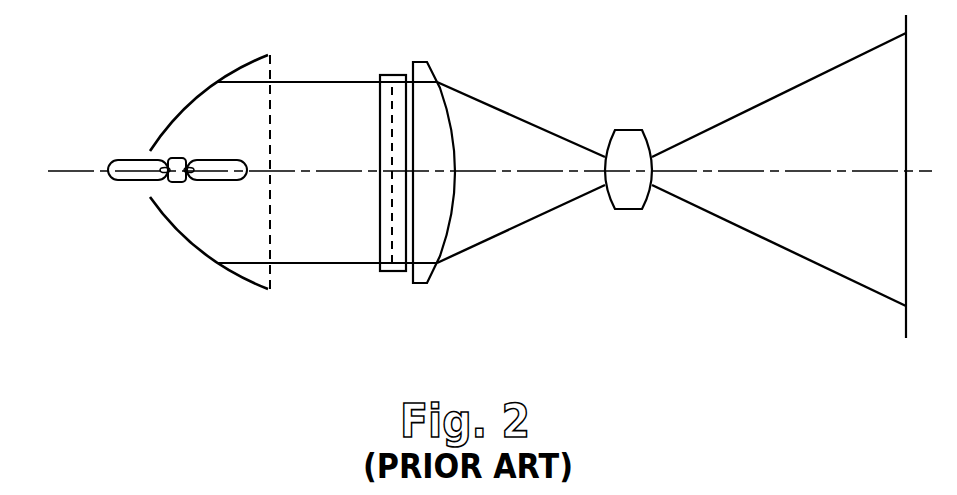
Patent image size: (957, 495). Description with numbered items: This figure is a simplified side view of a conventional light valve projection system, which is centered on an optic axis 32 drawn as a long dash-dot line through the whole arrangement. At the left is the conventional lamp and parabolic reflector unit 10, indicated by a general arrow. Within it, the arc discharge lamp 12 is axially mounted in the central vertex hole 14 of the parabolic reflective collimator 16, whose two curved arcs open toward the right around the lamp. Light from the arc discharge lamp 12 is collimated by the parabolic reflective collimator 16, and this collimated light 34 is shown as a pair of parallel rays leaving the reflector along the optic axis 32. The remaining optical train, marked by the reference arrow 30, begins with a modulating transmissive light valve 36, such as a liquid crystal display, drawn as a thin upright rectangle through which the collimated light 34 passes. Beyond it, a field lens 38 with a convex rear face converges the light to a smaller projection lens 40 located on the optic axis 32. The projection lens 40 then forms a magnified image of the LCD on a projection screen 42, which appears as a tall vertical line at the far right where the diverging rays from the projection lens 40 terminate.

The lamp and parabolic reflector unit 10 is at (170, 167).
The arc discharge lamp 12 is at (132, 162).
The central vertex hole 14 is at (147, 196).
The parabolic reflective collimator 16 is at (178, 237).
The optical system 30 is at (561, 209).
The optic axis 32 is at (75, 173).
The collimated light 34 is at (302, 82).
The modulating transmissive light valve 36 is at (397, 272).
The field lens 38 is at (423, 283).
The projection lens 40 is at (628, 210).
The projection screen 42 is at (903, 317).